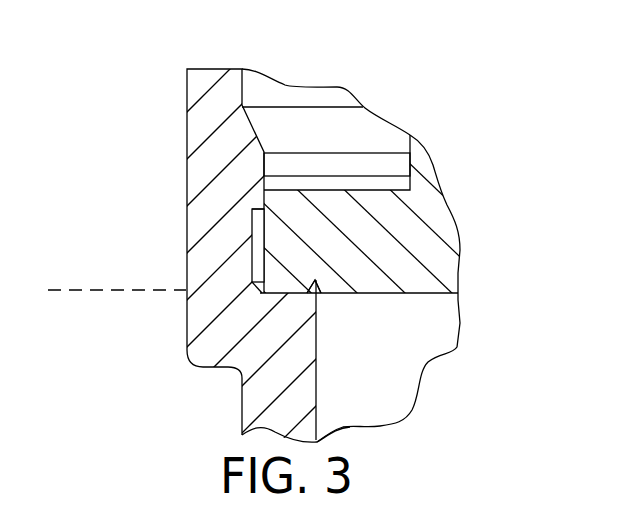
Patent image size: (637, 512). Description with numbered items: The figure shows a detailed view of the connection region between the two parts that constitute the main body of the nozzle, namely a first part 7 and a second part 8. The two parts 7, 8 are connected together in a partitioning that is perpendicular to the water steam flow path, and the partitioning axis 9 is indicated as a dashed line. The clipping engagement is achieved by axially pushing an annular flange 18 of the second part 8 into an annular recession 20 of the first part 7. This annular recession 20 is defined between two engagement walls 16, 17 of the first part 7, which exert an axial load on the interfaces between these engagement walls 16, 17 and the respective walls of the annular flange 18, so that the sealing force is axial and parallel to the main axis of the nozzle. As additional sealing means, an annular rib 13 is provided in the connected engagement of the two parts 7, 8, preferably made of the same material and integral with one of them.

The first part 7 is at (187, 330).
The second part 8 is at (458, 273).
The partitioning axis 9 is at (88, 290).
The annular rib 13 is at (318, 292).
The engagement wall 16 is at (275, 297).
The engagement wall 17 is at (264, 190).
The annular flange 18 is at (252, 233).
The annular recession 20 is at (252, 262).